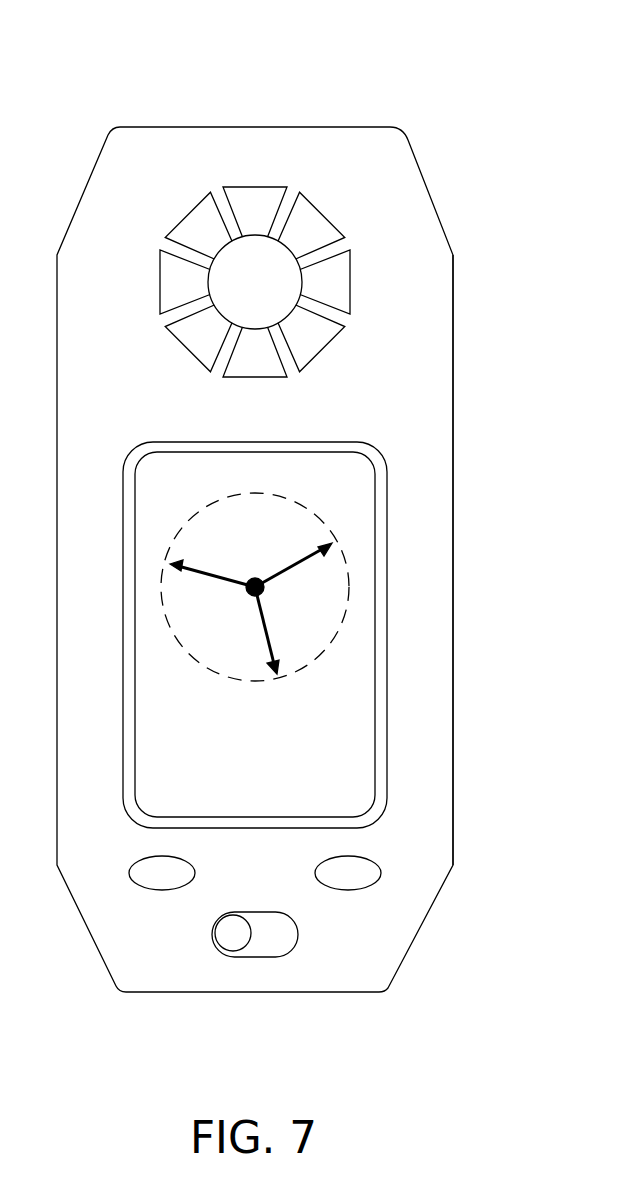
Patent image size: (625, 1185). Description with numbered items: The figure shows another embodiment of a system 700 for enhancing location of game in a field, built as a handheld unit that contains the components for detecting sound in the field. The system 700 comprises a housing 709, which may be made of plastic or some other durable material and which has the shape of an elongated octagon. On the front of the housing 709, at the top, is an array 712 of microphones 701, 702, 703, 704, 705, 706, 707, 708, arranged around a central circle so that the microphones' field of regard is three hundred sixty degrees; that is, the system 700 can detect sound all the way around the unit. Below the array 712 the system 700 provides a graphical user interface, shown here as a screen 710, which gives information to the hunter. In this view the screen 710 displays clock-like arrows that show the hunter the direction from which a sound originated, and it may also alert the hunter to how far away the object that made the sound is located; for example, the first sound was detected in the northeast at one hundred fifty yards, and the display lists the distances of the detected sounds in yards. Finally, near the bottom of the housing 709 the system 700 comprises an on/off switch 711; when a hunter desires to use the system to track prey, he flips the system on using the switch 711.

The system 700 is at (157, 64).
The microphone 701 is at (333, 222).
The microphone 702 is at (353, 280).
The microphone 703 is at (334, 340).
The microphone 704 is at (253, 378).
The microphone 705 is at (176, 340).
The microphone 706 is at (157, 282).
The microphone 707 is at (176, 224).
The microphone 708 is at (253, 186).
The housing 709 is at (454, 386).
The display screen 710 is at (363, 572).
The on/off switch 711 is at (296, 933).
The array of microphones 712 is at (297, 187).